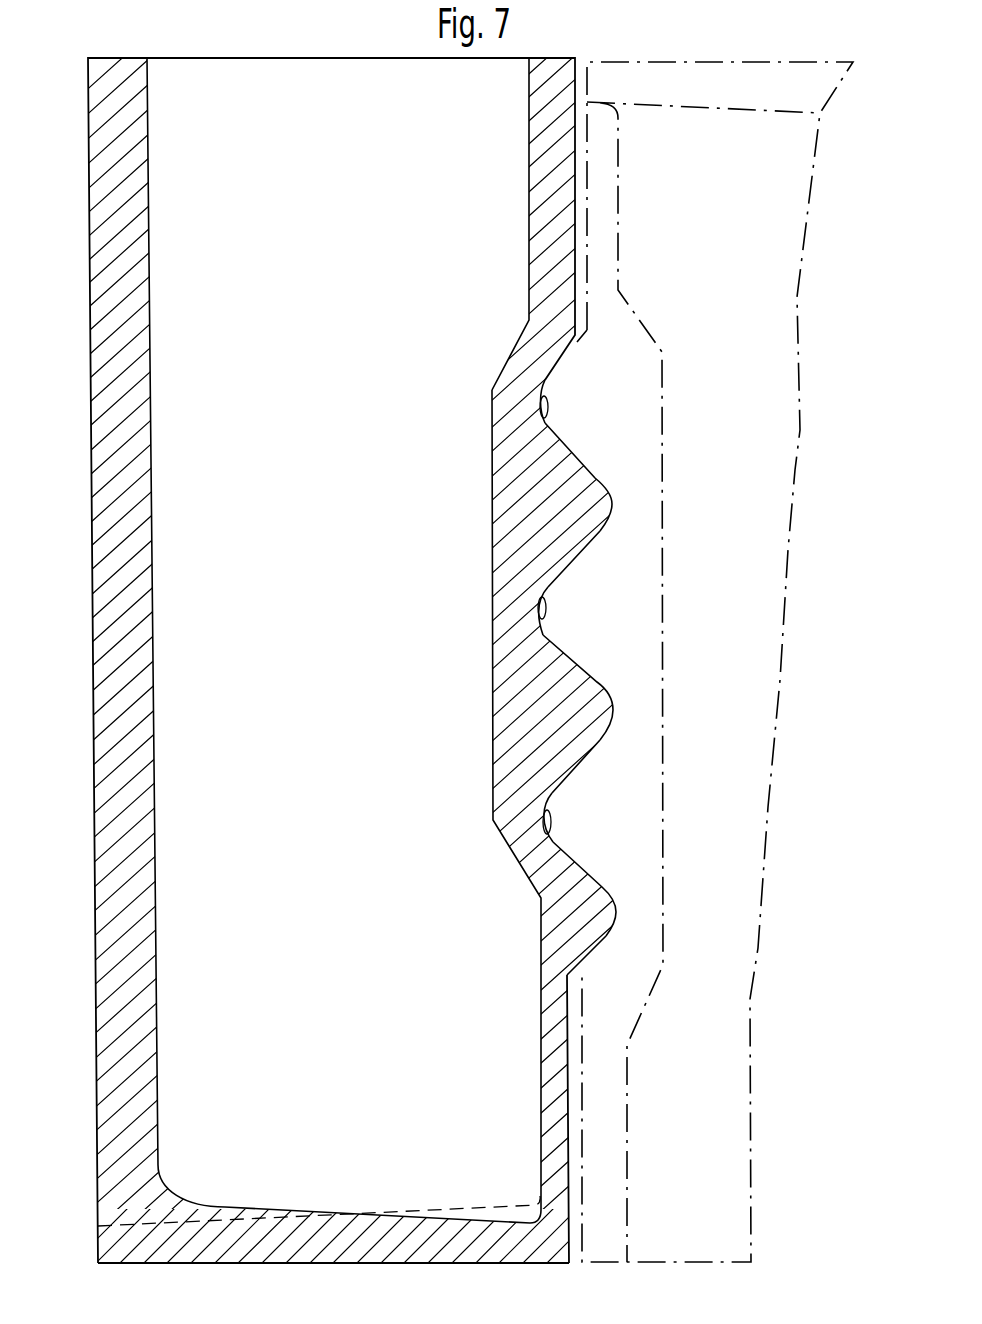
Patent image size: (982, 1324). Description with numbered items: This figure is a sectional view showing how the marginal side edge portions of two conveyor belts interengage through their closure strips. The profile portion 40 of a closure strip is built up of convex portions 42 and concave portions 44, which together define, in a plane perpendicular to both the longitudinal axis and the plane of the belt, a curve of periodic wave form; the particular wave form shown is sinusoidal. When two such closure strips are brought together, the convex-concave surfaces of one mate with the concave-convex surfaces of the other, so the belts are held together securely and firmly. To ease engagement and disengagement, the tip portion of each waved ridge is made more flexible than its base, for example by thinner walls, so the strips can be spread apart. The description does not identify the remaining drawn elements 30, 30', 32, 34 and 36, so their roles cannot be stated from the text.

The container body 30 is at (355, 662).
The original container contour 30' is at (715, 662).
The container bottom 32 is at (353, 1238).
The upper side wall 34 is at (530, 220).
The side wall 36 is at (518, 742).
The profile portion 40 is at (540, 452).
The convex portions 42 is at (577, 558).
The concave portions 44 is at (540, 415).